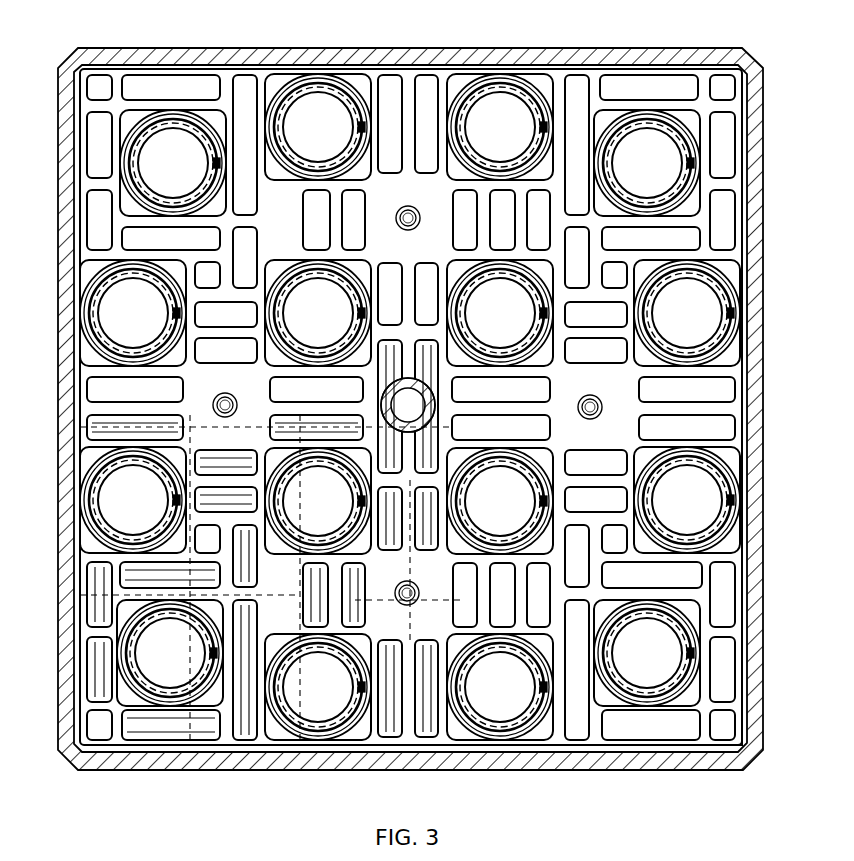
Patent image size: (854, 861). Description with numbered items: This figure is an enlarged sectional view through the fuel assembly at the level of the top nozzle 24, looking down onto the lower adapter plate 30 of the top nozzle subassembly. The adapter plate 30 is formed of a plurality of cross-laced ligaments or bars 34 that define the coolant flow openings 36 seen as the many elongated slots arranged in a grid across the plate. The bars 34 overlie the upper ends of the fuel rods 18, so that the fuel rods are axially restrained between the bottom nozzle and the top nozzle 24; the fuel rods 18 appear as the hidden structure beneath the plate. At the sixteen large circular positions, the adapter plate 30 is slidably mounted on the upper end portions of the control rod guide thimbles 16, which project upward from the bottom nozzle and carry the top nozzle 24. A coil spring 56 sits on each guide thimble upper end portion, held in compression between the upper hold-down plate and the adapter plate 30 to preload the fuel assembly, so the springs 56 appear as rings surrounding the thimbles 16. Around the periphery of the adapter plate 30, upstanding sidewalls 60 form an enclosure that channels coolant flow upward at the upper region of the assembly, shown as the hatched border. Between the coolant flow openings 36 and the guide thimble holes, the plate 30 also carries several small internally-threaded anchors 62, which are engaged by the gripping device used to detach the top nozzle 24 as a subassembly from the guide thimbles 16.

The control rod guide thimbles 16 is at (310, 98).
The fuel rods 18 is at (197, 742).
The top nozzle 24 is at (767, 173).
The lower adapter plate 30 is at (733, 553).
The cross-laced ligaments or bars 34 is at (700, 594).
The coolant flow openings 36 is at (97, 122).
The coil spring 56 is at (173, 114).
The upstanding sidewalls 60 is at (58, 88).
The internally-threaded anchors 62 is at (400, 209).